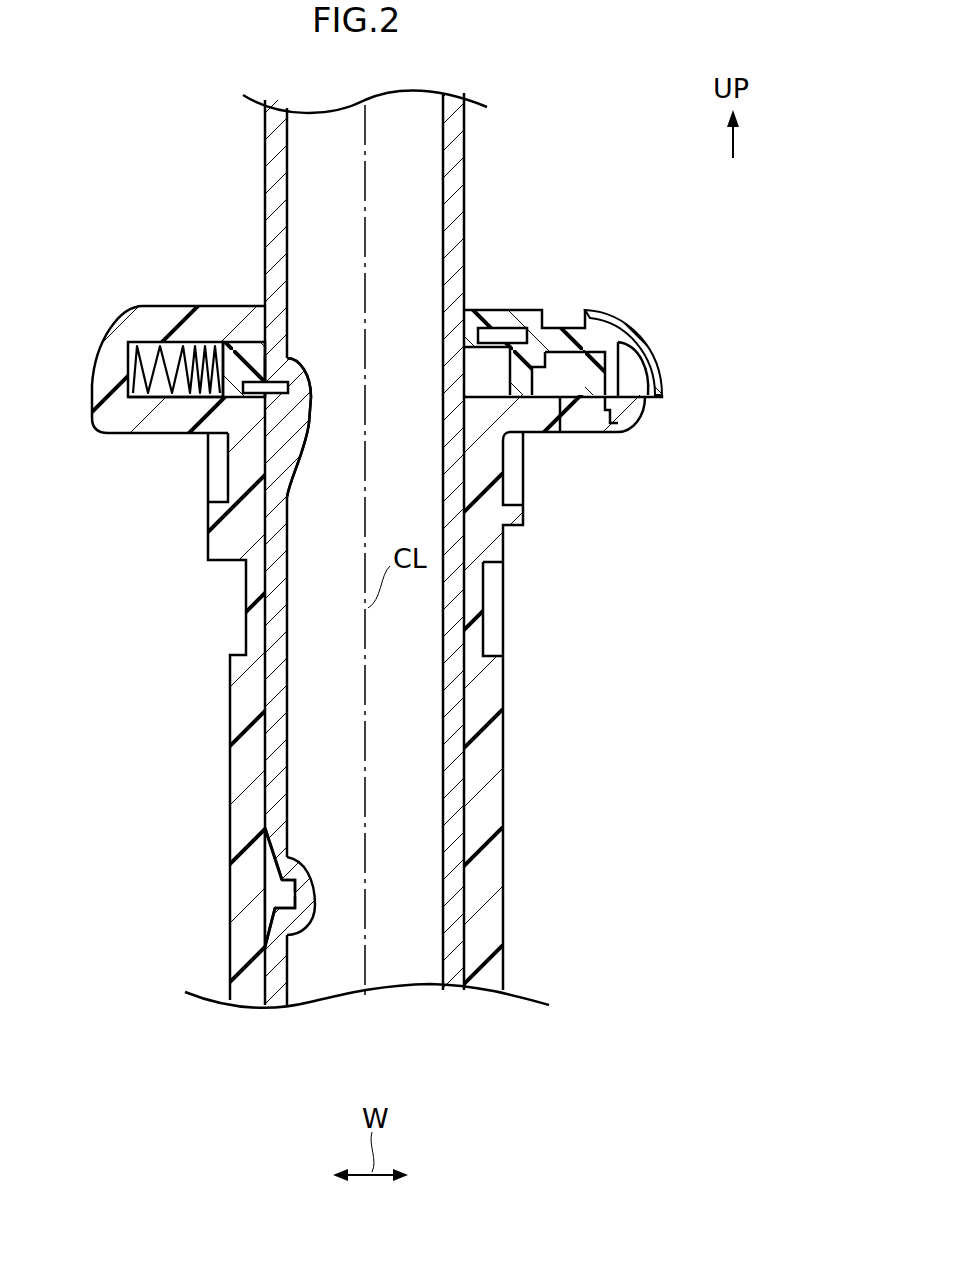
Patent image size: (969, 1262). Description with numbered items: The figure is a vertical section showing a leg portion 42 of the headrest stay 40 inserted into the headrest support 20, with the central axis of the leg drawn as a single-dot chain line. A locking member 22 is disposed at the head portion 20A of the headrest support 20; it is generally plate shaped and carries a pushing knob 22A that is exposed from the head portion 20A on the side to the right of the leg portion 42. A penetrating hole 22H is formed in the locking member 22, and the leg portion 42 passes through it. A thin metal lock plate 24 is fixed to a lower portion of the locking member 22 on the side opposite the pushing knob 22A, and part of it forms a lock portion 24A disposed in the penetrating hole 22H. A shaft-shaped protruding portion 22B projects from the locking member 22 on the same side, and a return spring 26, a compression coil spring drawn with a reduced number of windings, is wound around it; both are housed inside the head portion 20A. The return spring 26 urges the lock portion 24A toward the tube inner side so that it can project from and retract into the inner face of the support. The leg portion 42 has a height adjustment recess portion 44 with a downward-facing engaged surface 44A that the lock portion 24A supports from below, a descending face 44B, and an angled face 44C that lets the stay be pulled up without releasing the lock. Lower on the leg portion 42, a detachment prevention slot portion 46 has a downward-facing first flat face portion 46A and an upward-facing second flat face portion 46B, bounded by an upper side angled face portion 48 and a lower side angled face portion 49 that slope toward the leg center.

The headrest support 20 is at (384, 606).
The head portion 20A is at (165, 304).
The locking member 22 is at (240, 335).
The pushing knob 22A is at (630, 318).
The protruding portion 22B is at (200, 398).
The penetrating hole 22H is at (292, 356).
The lock plate 24 is at (240, 400).
The lock portion 24A is at (289, 384).
The return spring 26 is at (150, 342).
The headrest stay 40 is at (510, 132).
The leg portion 42 is at (477, 190).
The height adjustment recess portion 44 is at (292, 438).
The engaged surface 44A is at (296, 392).
The descending face 44B is at (297, 412).
The angled face 44C is at (297, 476).
The detachment prevention slot portion 46 is at (280, 899).
The first flat face portion 46A is at (282, 889).
The second flat face portion 46B is at (278, 900).
The upper side angled face portion 48 is at (263, 857).
The lower side angled face portion 49 is at (268, 930).